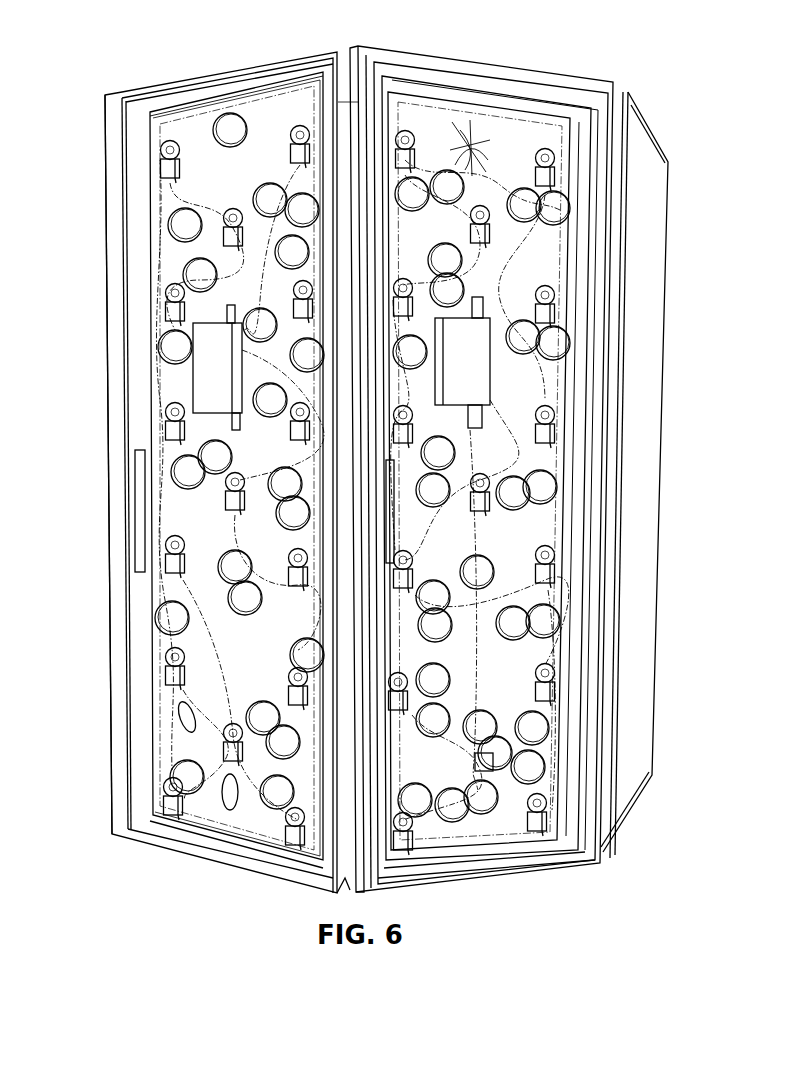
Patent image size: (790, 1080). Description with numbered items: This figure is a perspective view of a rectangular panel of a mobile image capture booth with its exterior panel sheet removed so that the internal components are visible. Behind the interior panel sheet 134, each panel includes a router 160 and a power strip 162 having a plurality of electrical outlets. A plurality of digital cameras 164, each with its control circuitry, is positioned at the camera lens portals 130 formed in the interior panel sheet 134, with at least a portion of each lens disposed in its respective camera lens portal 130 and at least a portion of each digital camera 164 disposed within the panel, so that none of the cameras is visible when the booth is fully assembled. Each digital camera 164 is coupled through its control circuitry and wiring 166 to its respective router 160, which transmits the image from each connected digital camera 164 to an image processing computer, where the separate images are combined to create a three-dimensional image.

The camera lens portal 130 is at (165, 788).
The interior panel sheet 134 is at (190, 122).
The router 160 is at (205, 388).
The power strip 162 is at (135, 528).
The digital camera 164 is at (160, 155).
The wiring 166 is at (168, 226).